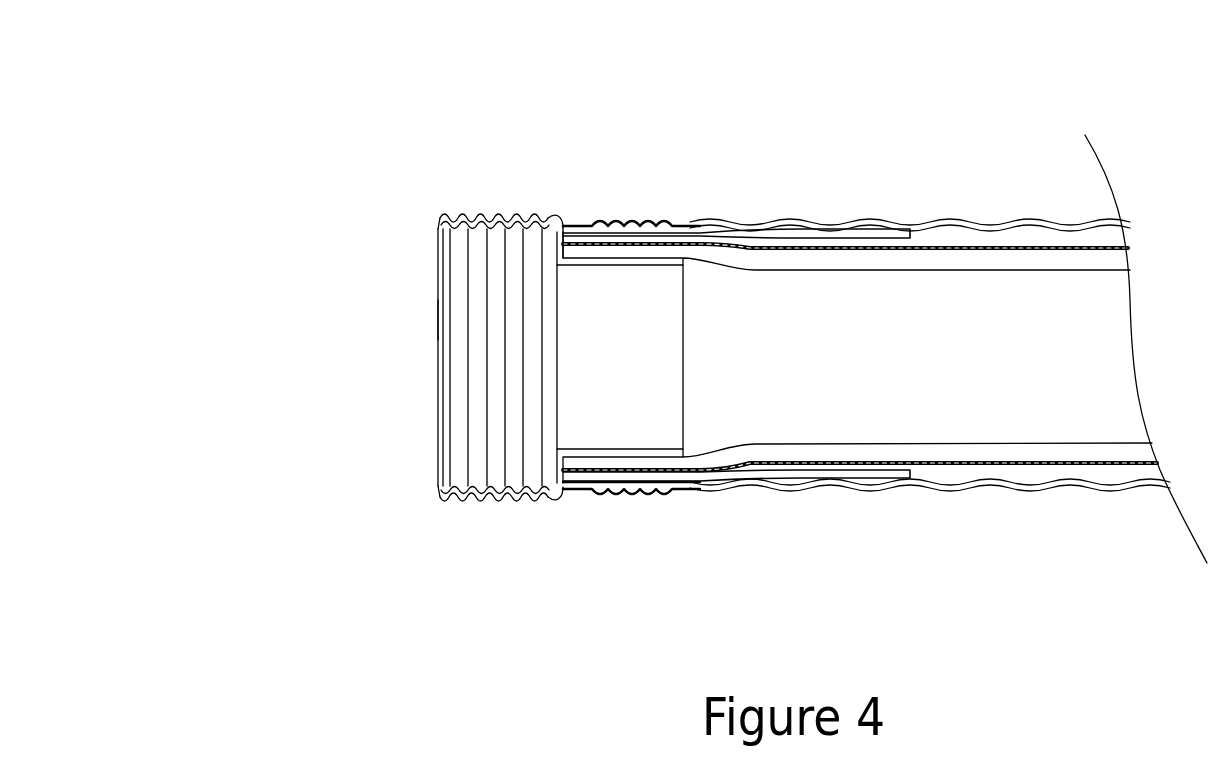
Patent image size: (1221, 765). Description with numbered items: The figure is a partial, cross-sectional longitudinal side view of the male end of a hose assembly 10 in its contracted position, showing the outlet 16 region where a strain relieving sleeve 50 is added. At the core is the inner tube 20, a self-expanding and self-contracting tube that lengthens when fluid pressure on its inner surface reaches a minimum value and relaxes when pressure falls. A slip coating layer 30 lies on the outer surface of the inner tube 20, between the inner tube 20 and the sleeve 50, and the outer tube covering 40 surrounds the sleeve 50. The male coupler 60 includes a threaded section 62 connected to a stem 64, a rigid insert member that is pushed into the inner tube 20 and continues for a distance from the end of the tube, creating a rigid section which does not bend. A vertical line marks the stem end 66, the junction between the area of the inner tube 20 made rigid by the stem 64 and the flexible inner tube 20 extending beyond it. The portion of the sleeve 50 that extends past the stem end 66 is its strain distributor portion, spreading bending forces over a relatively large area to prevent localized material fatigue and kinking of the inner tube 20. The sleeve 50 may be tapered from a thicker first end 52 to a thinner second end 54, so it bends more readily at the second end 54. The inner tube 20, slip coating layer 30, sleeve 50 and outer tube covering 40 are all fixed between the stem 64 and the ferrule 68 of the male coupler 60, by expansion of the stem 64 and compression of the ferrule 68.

The hose assembly 10 is at (572, 207).
The outlet 16 is at (437, 317).
The inner tube 20 is at (1106, 254).
The slip coating layer 30 is at (1012, 249).
The outer tube covering 40 is at (768, 227).
The sleeve 50 is at (705, 481).
The first end 52 is at (556, 214).
The second end 54 is at (912, 226).
The male coupler 60 is at (455, 214).
The threaded section 62 is at (492, 507).
The stem 64 is at (621, 266).
The stem end 66 is at (688, 358).
The ferrule 68 is at (650, 224).